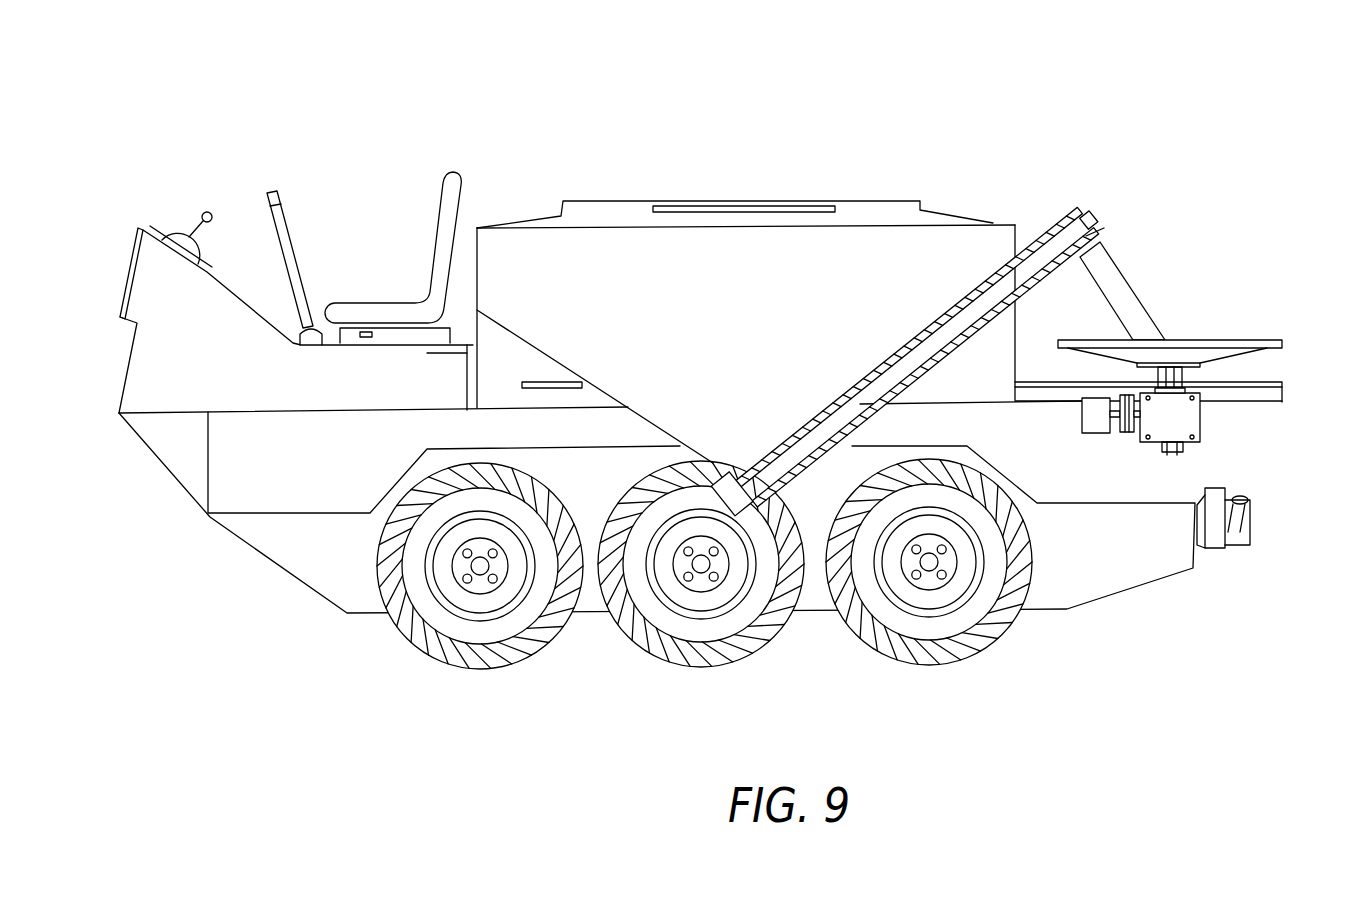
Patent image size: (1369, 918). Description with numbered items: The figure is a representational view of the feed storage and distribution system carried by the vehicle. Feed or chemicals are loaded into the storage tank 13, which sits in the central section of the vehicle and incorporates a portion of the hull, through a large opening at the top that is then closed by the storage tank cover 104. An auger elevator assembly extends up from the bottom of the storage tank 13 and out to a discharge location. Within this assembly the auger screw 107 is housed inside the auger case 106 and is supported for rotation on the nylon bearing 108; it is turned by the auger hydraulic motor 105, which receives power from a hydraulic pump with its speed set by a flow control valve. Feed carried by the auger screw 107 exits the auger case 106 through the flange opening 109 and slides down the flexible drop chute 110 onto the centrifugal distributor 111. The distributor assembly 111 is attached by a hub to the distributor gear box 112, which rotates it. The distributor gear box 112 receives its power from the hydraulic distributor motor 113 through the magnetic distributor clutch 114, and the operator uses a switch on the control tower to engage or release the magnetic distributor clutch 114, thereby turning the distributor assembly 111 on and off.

The storage tank 13 is at (523, 217).
The storage tank cover 104 is at (625, 197).
The auger hydraulic motor 105 is at (747, 517).
The auger case 106 is at (900, 382).
The auger screw 107 is at (1047, 238).
The nylon bearing 108 is at (1085, 212).
The flange opening 109 is at (1107, 232).
The flexible drop chute 110 is at (1133, 280).
The centrifugal distributor 111 is at (1212, 335).
The distributor gear box 112 is at (1205, 423).
The hydraulic distributor motor 113 is at (1097, 437).
The magnetic distributor clutch 114 is at (1128, 437).